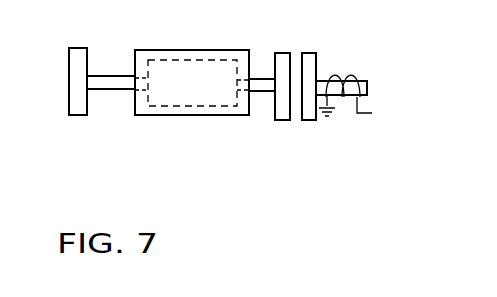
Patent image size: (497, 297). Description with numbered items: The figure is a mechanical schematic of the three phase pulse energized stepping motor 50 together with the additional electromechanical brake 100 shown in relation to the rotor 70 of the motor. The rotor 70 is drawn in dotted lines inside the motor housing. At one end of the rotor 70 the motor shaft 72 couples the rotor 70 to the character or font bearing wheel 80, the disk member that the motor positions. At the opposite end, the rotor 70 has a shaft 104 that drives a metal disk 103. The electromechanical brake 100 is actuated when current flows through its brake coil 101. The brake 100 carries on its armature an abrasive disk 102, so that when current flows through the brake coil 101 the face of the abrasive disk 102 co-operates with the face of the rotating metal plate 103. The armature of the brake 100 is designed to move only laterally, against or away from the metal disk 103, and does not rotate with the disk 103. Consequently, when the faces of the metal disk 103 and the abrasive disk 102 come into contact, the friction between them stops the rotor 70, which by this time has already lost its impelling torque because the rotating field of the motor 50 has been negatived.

The pulse energized motor 50 is at (211, 117).
The rotor 70 is at (152, 60).
The motor shaft 72 is at (103, 81).
The character or font bearing wheel 80 is at (75, 115).
The electromechanical brake 100 is at (357, 75).
The brake coil 101 is at (372, 113).
The abrasive disk 102 is at (310, 60).
The metal disk 103 is at (280, 60).
The shaft 104 is at (267, 80).